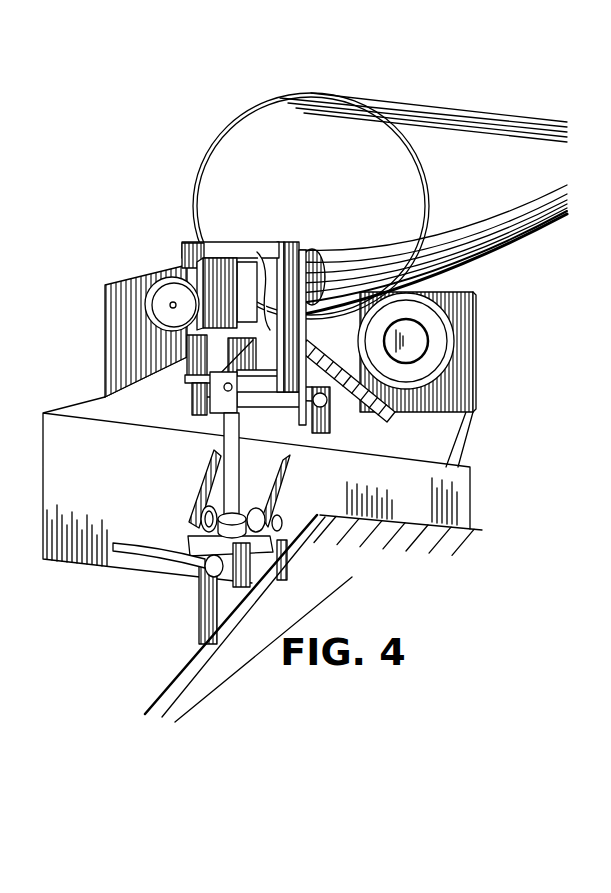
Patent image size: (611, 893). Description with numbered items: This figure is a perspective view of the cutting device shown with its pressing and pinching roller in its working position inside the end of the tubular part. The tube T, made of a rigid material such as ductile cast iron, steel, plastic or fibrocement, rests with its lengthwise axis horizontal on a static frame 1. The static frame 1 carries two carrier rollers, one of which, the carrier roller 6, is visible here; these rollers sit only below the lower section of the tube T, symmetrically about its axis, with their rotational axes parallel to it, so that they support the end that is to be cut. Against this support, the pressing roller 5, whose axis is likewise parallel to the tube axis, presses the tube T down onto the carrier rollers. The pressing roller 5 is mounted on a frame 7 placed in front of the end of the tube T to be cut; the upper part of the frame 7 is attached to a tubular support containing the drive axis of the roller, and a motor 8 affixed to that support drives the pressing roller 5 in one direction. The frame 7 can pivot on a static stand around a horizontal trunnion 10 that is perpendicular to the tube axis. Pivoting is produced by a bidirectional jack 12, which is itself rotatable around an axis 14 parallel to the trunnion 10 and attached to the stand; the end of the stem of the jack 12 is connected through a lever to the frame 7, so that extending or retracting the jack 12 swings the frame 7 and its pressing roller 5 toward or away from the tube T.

The tube T is at (491, 138).
The static frame 1 is at (466, 310).
The pressing roller 5 is at (316, 276).
The carrier roller 6 is at (442, 347).
The frame 7 is at (290, 238).
The motor 8 is at (178, 268).
The trunnion 10 is at (325, 399).
The bidirectional jack 12 is at (218, 606).
The axis 14 is at (278, 520).